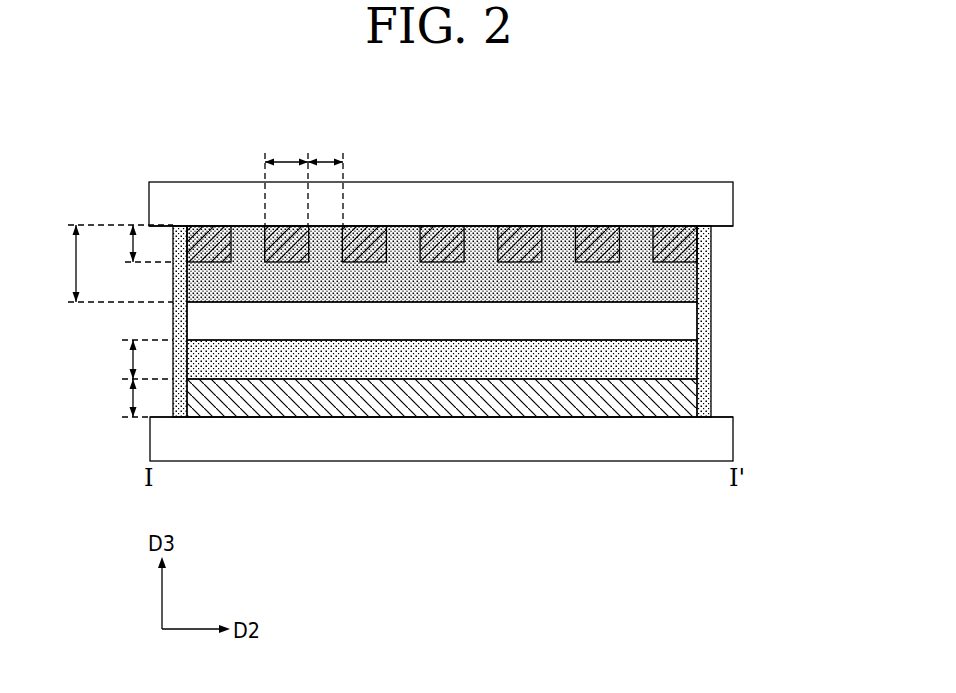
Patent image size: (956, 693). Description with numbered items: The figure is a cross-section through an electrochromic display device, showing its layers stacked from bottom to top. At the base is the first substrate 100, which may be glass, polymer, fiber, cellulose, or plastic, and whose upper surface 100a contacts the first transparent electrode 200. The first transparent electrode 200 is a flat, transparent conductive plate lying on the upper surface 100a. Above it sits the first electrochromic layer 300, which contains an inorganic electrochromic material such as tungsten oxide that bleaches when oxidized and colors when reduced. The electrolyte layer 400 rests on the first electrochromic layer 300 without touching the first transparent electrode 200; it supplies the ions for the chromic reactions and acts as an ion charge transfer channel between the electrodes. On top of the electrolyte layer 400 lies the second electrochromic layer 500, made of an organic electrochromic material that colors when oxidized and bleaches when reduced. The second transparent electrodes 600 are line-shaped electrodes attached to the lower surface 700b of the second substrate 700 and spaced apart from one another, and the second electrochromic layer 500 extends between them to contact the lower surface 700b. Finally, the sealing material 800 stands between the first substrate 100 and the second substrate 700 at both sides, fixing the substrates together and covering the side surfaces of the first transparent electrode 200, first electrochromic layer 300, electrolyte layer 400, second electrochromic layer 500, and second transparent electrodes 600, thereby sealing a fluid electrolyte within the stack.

The first substrate 100 is at (720, 438).
The upper surface of the first substrate 100a is at (720, 412).
The first transparent electrode 200 is at (688, 398).
The first electrochromic layer 300 is at (685, 361).
The electrolyte layer 400 is at (685, 320).
The second electrochromic layer 500 is at (685, 282).
The second transparent electrodes 600 is at (685, 243).
The second substrate 700 is at (720, 202).
The lower surface of the second substrate 700b is at (719, 228).
The sealing material 800 is at (180, 318).